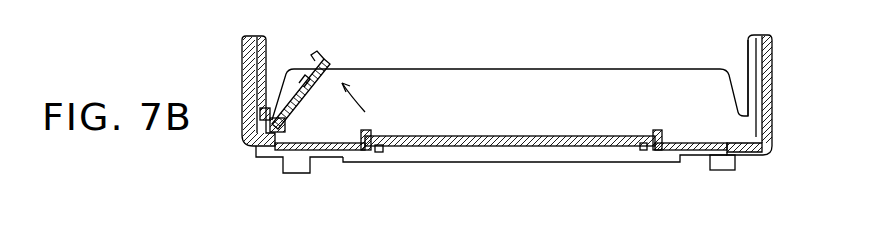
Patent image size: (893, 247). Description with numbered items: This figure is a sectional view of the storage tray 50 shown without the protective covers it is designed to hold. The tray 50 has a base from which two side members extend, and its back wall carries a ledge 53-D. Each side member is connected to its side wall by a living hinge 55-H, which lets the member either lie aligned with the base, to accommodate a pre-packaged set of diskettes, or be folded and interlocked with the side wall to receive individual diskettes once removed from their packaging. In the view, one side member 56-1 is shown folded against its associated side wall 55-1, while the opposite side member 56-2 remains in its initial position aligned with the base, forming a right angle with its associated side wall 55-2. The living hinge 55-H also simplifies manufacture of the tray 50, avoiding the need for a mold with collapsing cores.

The side wall 55-2 is at (240, 61).
The living hinge 55-H is at (248, 152).
The ledge 53-D is at (607, 69).
The side member 56-2 is at (343, 36).
The side member 56-1 is at (702, 138).
The storage tray 50 is at (605, 163).
The side wall 55-1 is at (770, 105).